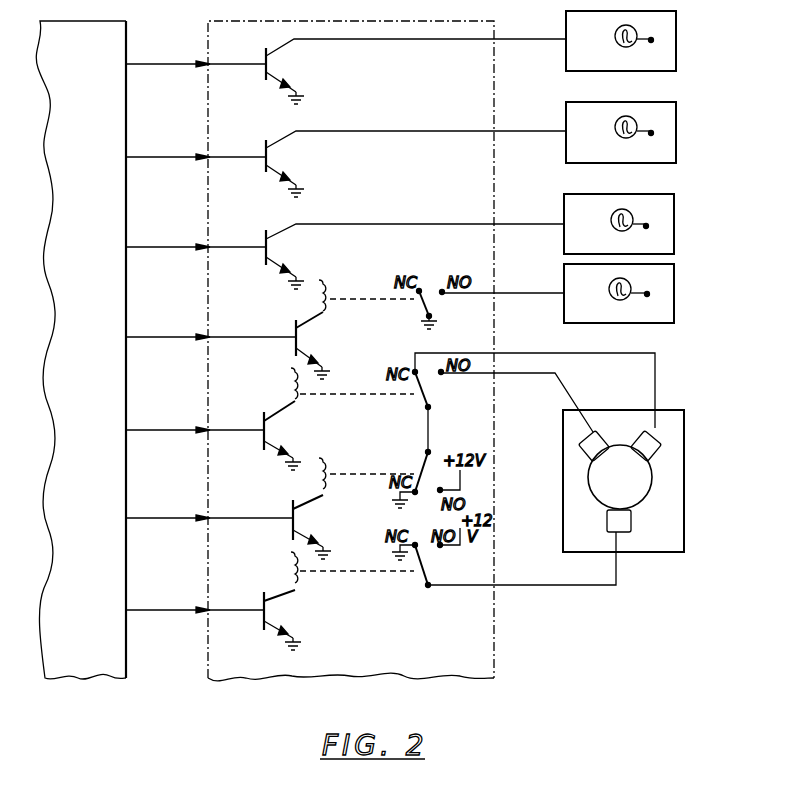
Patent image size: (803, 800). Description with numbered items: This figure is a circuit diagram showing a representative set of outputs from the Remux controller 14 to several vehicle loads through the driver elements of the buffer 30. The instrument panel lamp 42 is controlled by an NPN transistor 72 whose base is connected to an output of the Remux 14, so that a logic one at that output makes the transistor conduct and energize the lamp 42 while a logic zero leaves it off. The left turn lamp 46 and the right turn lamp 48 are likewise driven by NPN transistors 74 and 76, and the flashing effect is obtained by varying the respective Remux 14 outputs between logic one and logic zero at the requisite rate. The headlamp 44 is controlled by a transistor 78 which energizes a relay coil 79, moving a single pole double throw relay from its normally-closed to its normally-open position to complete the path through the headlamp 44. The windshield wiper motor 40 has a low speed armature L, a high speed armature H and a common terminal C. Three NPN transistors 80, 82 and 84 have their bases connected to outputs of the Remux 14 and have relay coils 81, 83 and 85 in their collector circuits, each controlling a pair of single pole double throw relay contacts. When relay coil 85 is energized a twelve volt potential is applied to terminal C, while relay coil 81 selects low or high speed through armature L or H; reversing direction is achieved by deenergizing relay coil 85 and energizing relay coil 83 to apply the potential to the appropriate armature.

The Remux controller 14 is at (108, 30).
The buffer 30 is at (288, 32).
The NPN transistor 72 is at (278, 50).
The NPN transistor 74 is at (278, 132).
The NPN transistor 76 is at (276, 222).
The transistor 78 is at (290, 330).
The relay coil 79 is at (318, 297).
The NPN transistor 80 is at (258, 424).
The relay coil 81 is at (292, 392).
The NPN transistor 82 is at (288, 514).
The relay coil 83 is at (318, 478).
The NPN transistor 84 is at (258, 604).
The relay coil 85 is at (298, 572).
The instrument panel lamp 42 is at (672, 50).
The left turn lamp 46 is at (672, 136).
The right turn lamp 48 is at (670, 228).
The headlamp 44 is at (670, 298).
The windshield wiper motor 40 is at (680, 498).